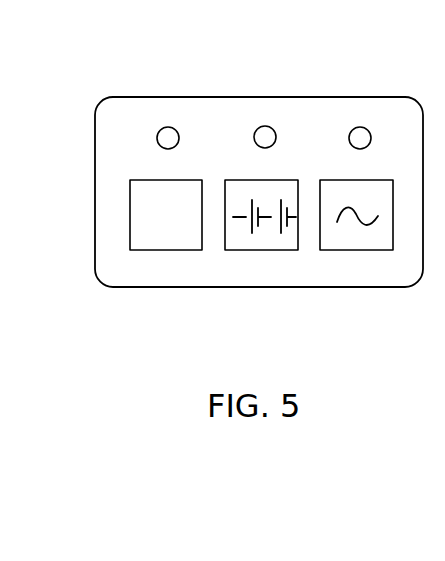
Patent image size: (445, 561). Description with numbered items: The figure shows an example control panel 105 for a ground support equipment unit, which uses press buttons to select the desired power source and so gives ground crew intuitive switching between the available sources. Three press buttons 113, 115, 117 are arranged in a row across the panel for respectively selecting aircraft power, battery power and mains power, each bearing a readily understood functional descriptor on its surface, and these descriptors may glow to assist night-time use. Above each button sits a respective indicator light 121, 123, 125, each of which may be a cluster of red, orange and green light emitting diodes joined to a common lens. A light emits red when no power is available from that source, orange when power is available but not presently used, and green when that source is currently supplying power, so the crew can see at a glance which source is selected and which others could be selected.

The control panel 105 is at (288, 87).
The press button 113 is at (148, 257).
The press button 115 is at (242, 257).
The press button 117 is at (346, 257).
The indicator light 121 is at (184, 153).
The indicator light 123 is at (280, 153).
The indicator light 125 is at (372, 153).